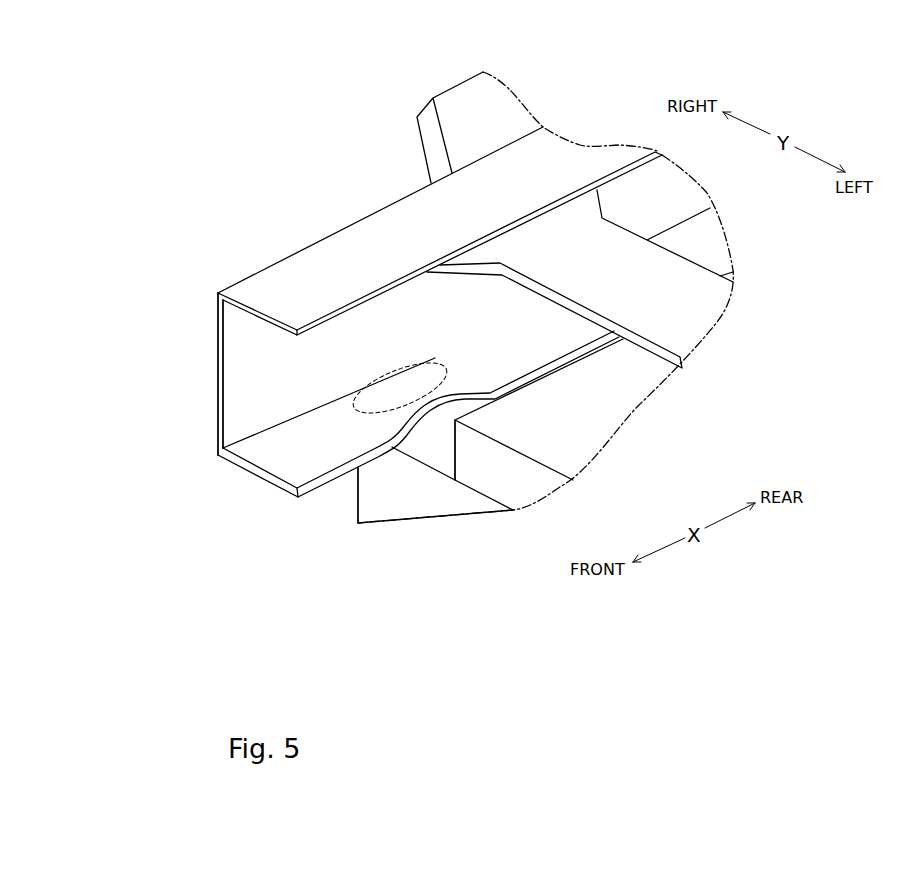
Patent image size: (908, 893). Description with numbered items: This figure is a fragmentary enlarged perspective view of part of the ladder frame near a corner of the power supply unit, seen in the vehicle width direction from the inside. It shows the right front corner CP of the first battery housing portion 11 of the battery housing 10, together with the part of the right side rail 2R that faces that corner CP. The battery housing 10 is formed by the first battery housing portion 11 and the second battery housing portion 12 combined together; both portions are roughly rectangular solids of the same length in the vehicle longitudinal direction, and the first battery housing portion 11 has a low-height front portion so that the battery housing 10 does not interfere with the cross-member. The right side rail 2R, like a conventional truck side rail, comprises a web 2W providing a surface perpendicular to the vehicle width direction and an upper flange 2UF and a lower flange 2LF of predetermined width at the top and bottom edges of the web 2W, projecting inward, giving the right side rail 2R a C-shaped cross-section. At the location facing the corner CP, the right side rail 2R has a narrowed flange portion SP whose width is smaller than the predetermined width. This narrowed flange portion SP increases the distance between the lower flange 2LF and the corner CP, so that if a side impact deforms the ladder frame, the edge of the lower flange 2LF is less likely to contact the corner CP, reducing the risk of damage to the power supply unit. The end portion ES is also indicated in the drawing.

The right side rail 2R is at (137, 362).
The upper flange 2UF is at (290, 311).
The web 2W is at (258, 390).
The lower flange 2LF is at (290, 457).
The end portion / tab ES is at (482, 110).
The narrowed flange portion SP is at (357, 387).
The corner CP is at (443, 421).
The battery housing 10 is at (492, 599).
The first battery housing portion 11 is at (480, 463).
The second battery housing portion 12 is at (387, 500).